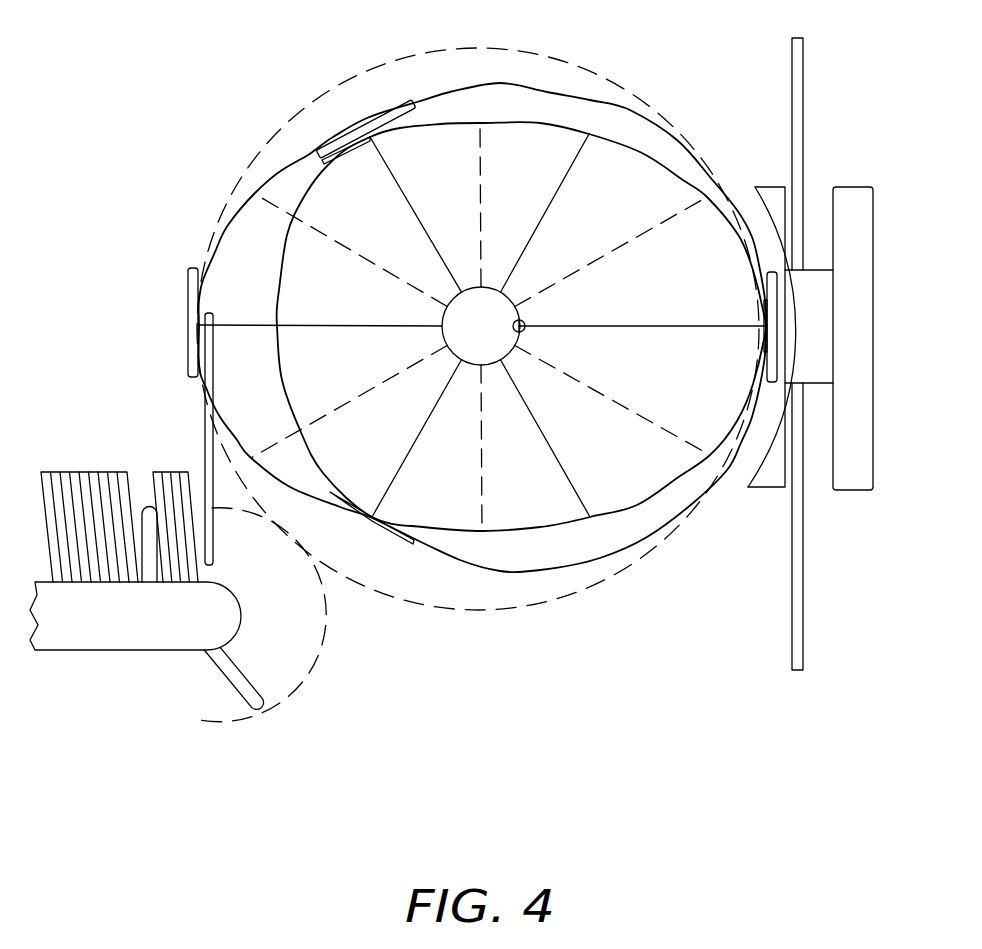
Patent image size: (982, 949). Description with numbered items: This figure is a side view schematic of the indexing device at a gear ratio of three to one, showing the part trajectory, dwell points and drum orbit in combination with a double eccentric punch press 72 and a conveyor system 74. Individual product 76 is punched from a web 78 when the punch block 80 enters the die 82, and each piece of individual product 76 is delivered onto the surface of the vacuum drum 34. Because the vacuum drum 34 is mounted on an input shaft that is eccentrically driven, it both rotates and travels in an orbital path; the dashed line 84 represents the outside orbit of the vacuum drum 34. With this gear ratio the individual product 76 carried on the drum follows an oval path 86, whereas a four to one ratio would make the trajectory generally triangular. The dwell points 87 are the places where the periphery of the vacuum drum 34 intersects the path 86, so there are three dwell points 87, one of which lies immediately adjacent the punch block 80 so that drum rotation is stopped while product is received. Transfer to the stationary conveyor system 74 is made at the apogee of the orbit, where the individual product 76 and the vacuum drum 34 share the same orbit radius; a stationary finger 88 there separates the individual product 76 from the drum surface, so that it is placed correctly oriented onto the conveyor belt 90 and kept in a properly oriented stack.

The vacuum drum 34 is at (600, 558).
The double eccentric punch press 72 is at (838, 165).
The conveyor system 74 is at (204, 770).
The individual product 76 is at (398, 100).
The web 78 is at (803, 633).
The punch block 80 is at (817, 373).
The die 82 is at (762, 484).
The outside orbit of vacuum drum 84 is at (410, 606).
The oval path 86 is at (637, 505).
The dwell points 87 is at (381, 140).
The stationary finger 88 is at (215, 566).
The conveyor belt 90 is at (157, 652).